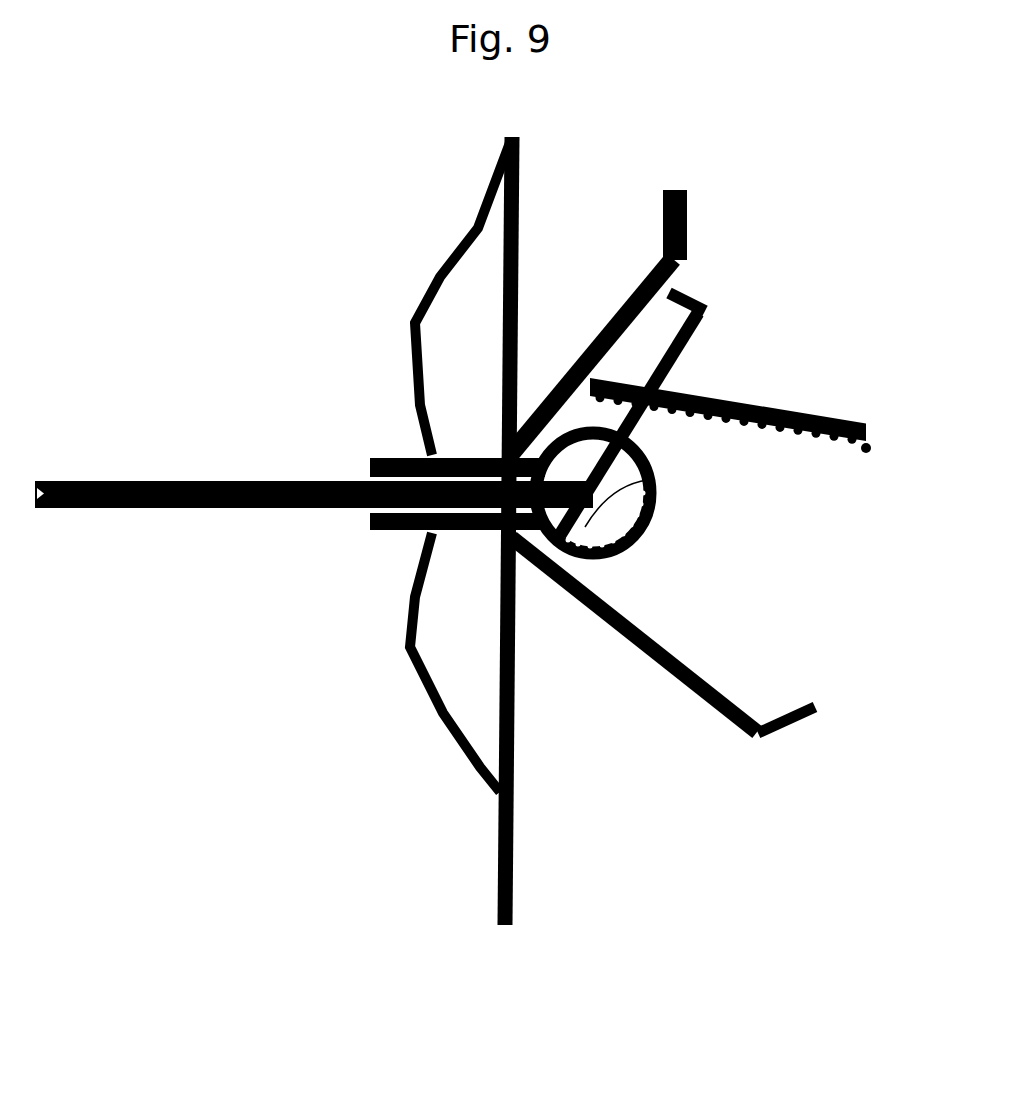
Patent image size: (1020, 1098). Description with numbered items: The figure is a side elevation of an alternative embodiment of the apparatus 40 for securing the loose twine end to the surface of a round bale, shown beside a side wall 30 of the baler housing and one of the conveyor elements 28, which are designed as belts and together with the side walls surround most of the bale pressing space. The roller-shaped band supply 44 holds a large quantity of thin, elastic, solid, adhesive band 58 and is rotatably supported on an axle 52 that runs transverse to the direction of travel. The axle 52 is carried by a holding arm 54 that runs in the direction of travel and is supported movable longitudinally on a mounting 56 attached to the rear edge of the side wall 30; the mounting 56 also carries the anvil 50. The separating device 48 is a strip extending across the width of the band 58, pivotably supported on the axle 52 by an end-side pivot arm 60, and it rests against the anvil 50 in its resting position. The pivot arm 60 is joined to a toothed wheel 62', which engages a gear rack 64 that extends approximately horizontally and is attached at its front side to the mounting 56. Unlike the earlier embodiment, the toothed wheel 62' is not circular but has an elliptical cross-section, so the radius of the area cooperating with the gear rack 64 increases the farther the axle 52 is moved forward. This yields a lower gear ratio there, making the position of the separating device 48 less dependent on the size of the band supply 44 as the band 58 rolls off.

The conveyor elements 28 is at (503, 342).
The side wall 30 is at (347, 428).
The apparatus for securing the loose twine end 40 is at (832, 345).
The band supply 44 is at (640, 532).
The separating device 48 is at (688, 297).
The anvil 50 is at (805, 720).
The axle 52 is at (568, 577).
The holding arm 54 is at (230, 507).
The mounting 56 is at (608, 325).
The band 58 is at (515, 680).
The pivot arm 60 is at (685, 343).
The toothed wheel 62' is at (656, 490).
The gear rack 64 is at (832, 455).